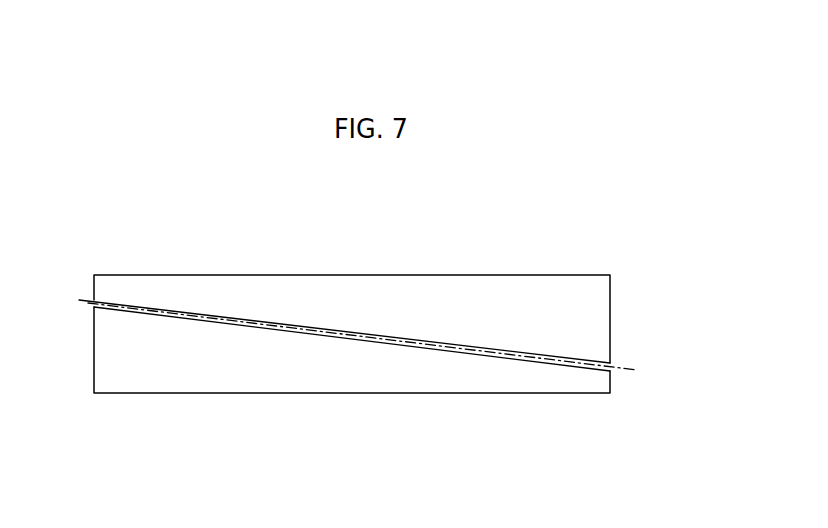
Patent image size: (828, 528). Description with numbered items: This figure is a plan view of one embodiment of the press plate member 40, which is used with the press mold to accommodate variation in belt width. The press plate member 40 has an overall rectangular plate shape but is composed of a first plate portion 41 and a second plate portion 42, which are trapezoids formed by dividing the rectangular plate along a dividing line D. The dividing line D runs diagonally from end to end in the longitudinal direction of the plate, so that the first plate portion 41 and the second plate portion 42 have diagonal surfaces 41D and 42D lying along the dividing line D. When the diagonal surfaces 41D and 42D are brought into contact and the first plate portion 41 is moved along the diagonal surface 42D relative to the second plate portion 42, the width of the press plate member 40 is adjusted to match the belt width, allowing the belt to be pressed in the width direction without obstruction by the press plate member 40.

The press plate member 40 is at (399, 340).
The first plate portion 41 is at (663, 322).
The second plate portion 42 is at (592, 329).
The diagonal surface of first plate portion 41D is at (323, 337).
The diagonal surface of second plate portion 42D is at (362, 334).
The dividing line D is at (91, 298).